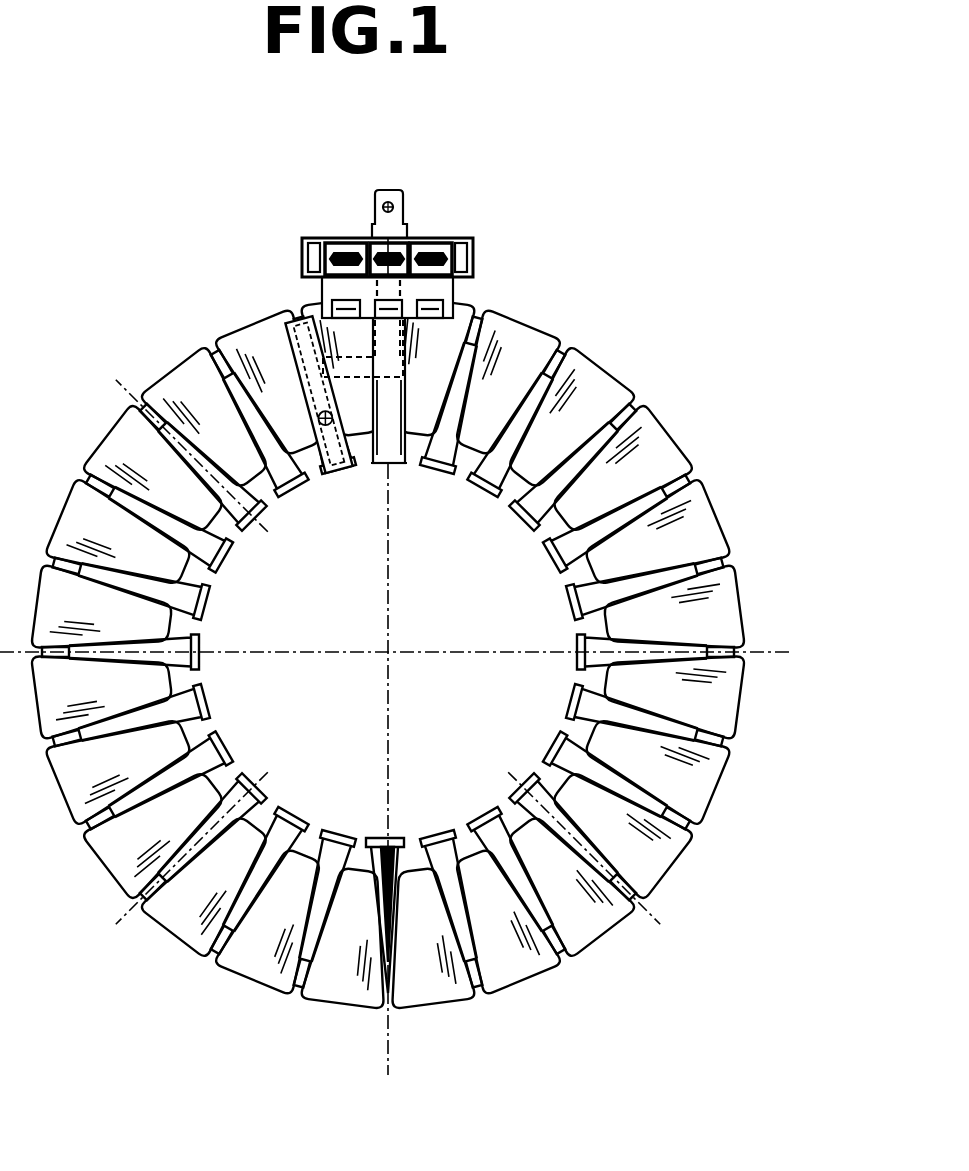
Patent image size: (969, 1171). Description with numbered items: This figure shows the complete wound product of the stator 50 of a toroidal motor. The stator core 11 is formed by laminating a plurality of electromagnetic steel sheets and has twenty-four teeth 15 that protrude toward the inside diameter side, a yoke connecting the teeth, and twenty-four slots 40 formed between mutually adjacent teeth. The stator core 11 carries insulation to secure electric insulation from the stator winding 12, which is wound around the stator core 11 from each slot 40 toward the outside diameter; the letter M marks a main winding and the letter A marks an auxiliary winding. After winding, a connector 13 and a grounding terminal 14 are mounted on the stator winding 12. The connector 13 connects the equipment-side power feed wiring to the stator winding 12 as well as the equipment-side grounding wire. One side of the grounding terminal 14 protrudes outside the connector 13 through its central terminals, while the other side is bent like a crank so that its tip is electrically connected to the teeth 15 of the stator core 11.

The stator core 11 is at (307, 817).
The stator winding 12 is at (665, 457).
The connector 13 is at (302, 240).
The grounding terminal 14 is at (326, 352).
The teeth 15 is at (328, 462).
The slot 40 is at (559, 345).
The stator 50 is at (429, 608).